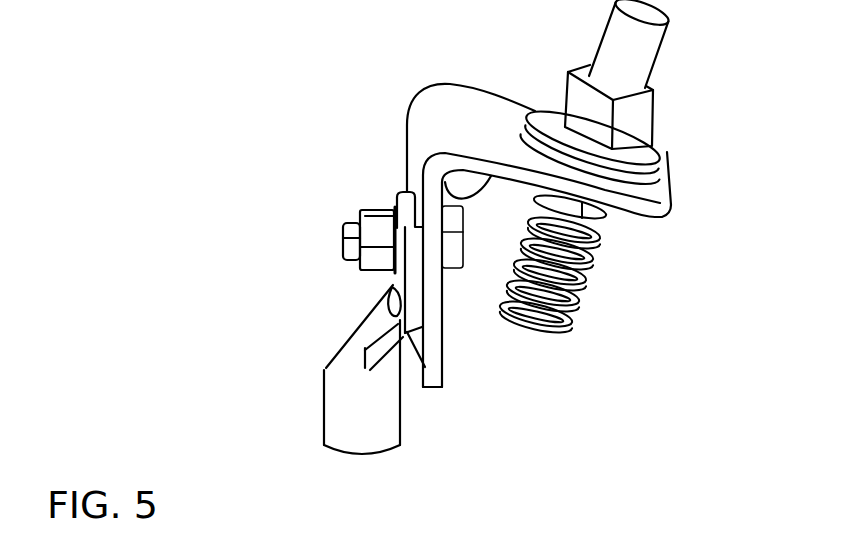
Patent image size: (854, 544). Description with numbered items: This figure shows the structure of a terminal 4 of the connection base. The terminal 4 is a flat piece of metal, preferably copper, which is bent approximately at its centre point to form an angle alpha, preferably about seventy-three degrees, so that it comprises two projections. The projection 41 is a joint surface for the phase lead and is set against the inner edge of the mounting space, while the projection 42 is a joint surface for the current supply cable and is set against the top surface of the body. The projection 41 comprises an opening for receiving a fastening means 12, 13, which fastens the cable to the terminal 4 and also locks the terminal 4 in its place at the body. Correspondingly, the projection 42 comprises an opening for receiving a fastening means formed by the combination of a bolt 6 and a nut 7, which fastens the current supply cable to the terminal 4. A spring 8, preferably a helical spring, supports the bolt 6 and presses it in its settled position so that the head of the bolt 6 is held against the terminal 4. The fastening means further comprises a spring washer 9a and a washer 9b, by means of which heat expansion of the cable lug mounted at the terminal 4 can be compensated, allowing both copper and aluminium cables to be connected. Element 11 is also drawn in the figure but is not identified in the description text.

The terminal 4 is at (438, 98).
The bolt 6 is at (643, 68).
The nut 7 is at (650, 117).
The spring 8 is at (568, 312).
The spring washer 9a is at (657, 150).
The washer 9b is at (673, 197).
The holder 11 is at (328, 416).
The fastening means 12 is at (343, 237).
The fastening means 13 is at (373, 223).
The projection 41 is at (440, 360).
The projection 42 is at (651, 217).